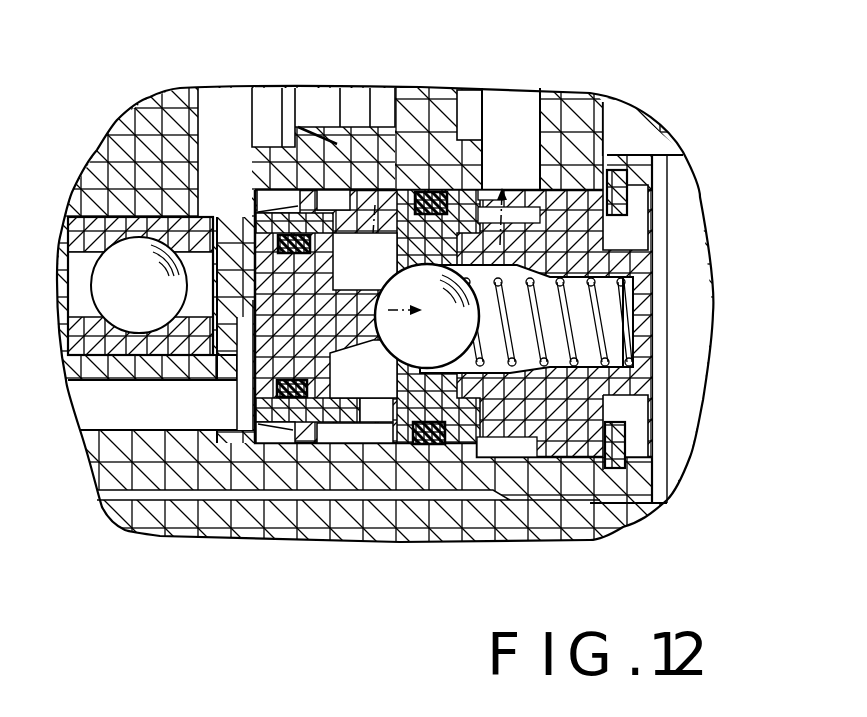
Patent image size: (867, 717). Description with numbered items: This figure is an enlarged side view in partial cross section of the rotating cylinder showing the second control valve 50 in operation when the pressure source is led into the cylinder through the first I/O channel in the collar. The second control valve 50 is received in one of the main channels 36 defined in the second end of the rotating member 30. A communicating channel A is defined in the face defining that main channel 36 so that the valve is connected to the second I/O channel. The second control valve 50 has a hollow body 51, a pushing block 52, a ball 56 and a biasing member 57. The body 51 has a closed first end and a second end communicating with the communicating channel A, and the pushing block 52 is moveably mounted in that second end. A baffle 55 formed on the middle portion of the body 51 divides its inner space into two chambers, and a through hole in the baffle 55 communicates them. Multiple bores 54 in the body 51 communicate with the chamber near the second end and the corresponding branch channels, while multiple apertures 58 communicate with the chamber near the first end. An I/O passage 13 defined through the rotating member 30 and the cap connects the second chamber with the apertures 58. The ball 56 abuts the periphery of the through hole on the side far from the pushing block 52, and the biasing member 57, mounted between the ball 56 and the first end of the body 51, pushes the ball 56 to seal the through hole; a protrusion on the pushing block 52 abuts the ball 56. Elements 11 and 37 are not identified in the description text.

The cover 11 is at (688, 400).
The I/O passage 13 is at (523, 115).
The rotating member 30 is at (427, 485).
The main channel 36 is at (337, 447).
The plug 37 is at (620, 198).
The second control valve 50 is at (226, 100).
The hollow body 51 is at (404, 436).
The pushing block 52 is at (257, 257).
The bores 54 is at (360, 191).
The baffle 55 is at (466, 190).
The ball 56 is at (450, 362).
The biasing member 57 is at (613, 307).
The apertures 58 is at (520, 195).
The communicating channel A is at (110, 430).